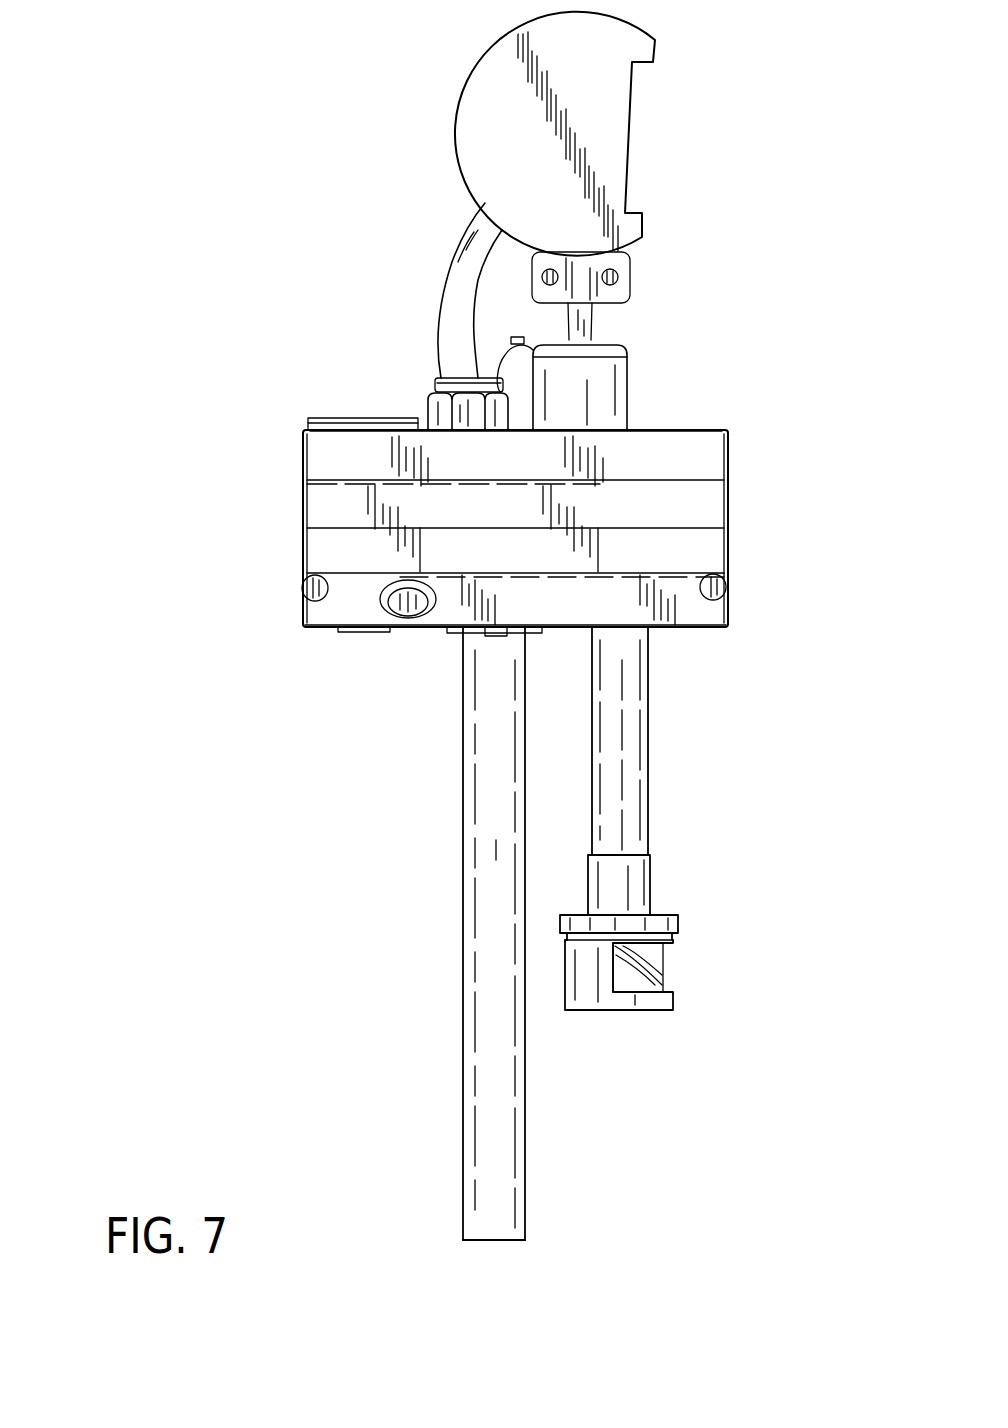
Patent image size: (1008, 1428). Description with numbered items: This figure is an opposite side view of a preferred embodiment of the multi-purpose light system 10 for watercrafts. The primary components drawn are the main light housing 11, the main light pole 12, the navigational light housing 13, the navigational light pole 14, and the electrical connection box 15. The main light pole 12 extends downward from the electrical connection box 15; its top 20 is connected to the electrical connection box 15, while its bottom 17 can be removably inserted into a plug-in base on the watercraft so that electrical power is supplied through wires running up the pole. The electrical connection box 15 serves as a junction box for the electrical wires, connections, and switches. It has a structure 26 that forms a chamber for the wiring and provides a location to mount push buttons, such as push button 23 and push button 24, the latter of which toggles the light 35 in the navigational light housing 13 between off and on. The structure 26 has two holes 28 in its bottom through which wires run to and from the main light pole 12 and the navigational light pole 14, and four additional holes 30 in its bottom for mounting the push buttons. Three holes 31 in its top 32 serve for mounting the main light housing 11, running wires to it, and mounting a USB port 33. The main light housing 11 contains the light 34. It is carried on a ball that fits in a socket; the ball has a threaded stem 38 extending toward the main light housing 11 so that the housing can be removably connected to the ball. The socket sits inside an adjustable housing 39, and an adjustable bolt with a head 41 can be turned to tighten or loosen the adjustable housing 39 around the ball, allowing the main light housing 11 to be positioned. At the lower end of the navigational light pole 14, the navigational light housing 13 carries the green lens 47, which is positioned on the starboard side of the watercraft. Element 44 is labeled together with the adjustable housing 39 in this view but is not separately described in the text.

The multi-purpose light system 10 is at (193, 365).
The main light housing 11 is at (600, 87).
The main light pole 12 is at (463, 968).
The navigational light housing 13 is at (625, 1010).
The navigational light pole 14 is at (650, 750).
The electrical connection box 15 is at (730, 465).
The bottom of the main light pole 17 is at (507, 1242).
The top of the main light pole 20 is at (465, 645).
The push button 23 is at (345, 632).
The push button 24 is at (400, 625).
The structure 26 is at (515, 534).
The holes 28 is at (510, 632).
The additional holes 30 is at (335, 628).
The holes 31 is at (340, 432).
The top 32 is at (705, 428).
The USB port 33 is at (322, 418).
The light 34 is at (633, 128).
The light 35 is at (673, 958).
The threaded stem 38 is at (593, 325).
The adjustable housing 39 is at (628, 393).
The head 41 is at (516, 338).
The valve 44 is at (580, 387).
The green lens 47 is at (655, 985).